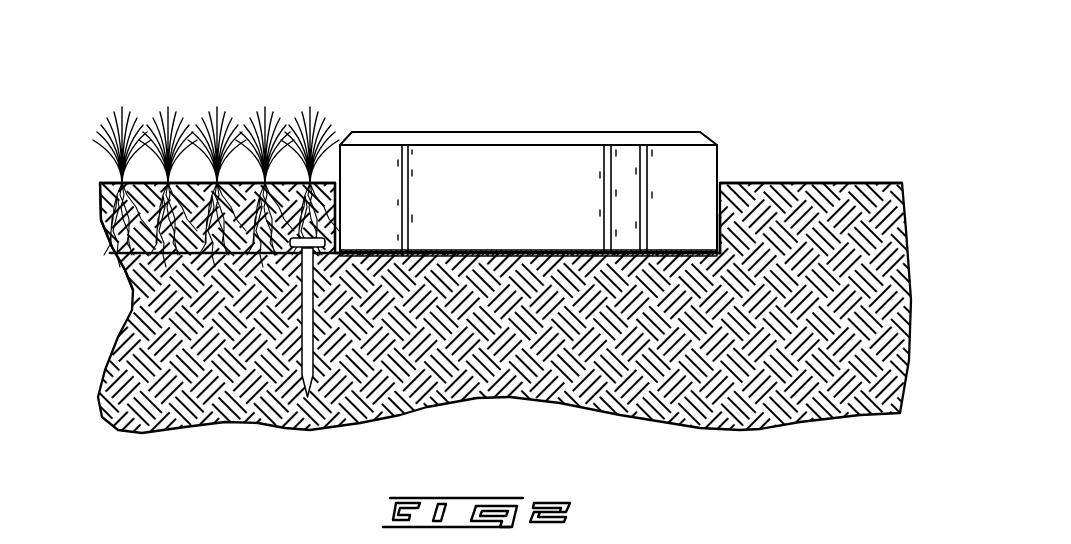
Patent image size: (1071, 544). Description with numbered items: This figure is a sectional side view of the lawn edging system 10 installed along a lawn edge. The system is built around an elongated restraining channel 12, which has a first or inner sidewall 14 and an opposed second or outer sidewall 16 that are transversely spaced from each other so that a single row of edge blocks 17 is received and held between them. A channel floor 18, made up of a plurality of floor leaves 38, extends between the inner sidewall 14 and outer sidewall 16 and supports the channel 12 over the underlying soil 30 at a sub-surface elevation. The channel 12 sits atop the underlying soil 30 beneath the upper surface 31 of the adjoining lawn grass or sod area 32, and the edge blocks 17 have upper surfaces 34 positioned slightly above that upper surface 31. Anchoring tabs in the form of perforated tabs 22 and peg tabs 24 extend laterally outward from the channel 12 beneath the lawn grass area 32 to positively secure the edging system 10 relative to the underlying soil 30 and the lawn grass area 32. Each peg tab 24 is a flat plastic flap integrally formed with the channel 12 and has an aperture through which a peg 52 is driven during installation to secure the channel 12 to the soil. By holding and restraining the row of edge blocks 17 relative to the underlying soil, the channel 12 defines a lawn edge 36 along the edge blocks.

The edging system 10 is at (573, 98).
The elongated restraining channel 12 is at (723, 245).
The inner sidewall 14 is at (337, 233).
The outer sidewall 16 is at (720, 217).
The edge blocks 17 is at (445, 155).
The channel floor 18 is at (485, 256).
The perforated tabs 22 is at (165, 275).
The peg tabs 24 is at (368, 252).
The underlying soil 30 is at (357, 410).
The upper surface 31 is at (110, 183).
The lawn grass area 32 is at (139, 106).
The upper surfaces 34 is at (487, 132).
The lawn edge 36 is at (333, 195).
The floor leaves 38 is at (530, 247).
The peg 52 is at (293, 397).